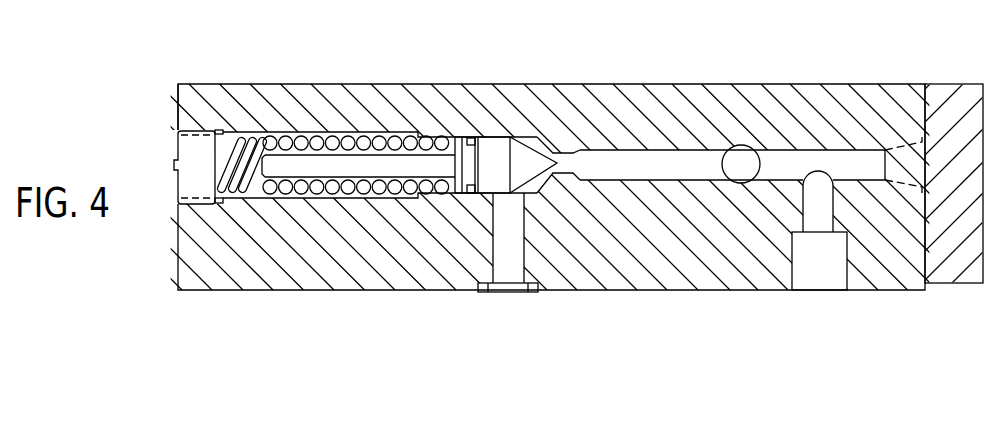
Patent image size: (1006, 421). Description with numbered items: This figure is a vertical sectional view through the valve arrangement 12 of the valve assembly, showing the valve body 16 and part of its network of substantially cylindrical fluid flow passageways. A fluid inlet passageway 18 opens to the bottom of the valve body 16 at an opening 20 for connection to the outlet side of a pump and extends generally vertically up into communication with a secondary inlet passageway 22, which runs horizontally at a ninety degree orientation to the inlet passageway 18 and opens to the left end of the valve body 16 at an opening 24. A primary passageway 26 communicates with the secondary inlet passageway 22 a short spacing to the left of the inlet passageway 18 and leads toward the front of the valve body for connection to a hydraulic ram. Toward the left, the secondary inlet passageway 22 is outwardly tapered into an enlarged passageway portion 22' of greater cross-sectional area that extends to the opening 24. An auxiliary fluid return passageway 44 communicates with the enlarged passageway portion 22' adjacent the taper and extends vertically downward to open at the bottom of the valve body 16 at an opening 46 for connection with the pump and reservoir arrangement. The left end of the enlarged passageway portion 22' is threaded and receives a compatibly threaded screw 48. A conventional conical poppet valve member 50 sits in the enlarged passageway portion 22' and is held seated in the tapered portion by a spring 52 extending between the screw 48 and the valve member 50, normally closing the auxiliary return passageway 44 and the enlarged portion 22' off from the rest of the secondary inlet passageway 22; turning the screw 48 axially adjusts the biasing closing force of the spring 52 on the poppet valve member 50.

The valve arrangement 12 is at (787, 82).
The valve body 16 is at (673, 102).
The fluid inlet passageway 18 is at (838, 260).
The opening of fluid inlet passageway 20 is at (818, 289).
The secondary inlet passageway 22 is at (751, 124).
The enlarged passageway portion 22' is at (380, 126).
The opening of secondary inlet passageway 24 is at (178, 128).
The primary passageway 26 is at (740, 150).
The auxiliary fluid return passageway 44 is at (527, 253).
The opening of auxiliary fluid return passageway 46 is at (515, 291).
The screw 48 is at (193, 183).
The conical poppet valve member 50 is at (492, 143).
The spring 52 is at (332, 143).